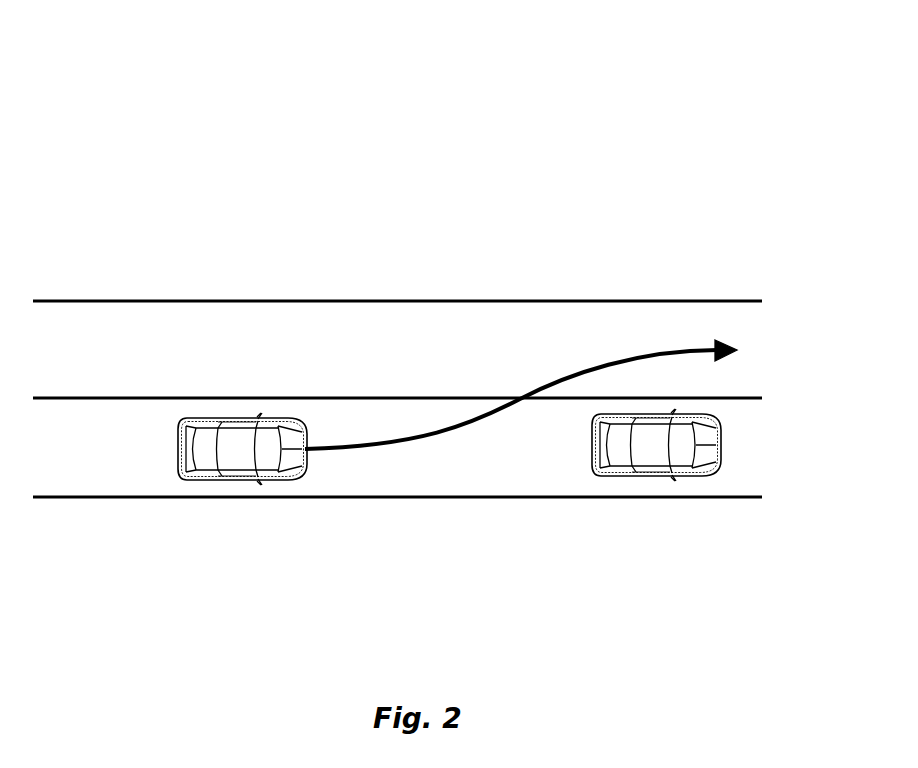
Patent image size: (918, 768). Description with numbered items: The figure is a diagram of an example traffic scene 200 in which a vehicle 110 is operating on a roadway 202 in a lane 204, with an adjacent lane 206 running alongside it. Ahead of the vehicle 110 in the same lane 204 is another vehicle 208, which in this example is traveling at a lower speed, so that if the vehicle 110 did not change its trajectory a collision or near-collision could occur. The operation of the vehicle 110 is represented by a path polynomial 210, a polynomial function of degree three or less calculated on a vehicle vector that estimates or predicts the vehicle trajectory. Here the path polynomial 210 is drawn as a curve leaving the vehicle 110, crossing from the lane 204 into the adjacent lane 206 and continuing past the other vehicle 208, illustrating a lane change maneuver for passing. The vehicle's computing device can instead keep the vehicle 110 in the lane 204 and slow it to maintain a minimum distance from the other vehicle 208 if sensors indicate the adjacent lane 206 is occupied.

The traffic scene 200 is at (453, 42).
The roadway 202 is at (207, 258).
The lane 204 is at (86, 458).
The adjacent lane 206 is at (86, 362).
The vehicle 110 is at (240, 468).
The another vehicle 208 is at (650, 470).
The path polynomial 210 is at (500, 415).